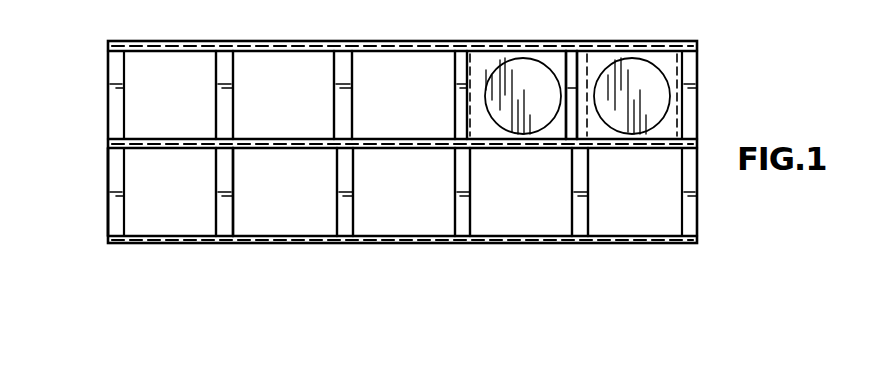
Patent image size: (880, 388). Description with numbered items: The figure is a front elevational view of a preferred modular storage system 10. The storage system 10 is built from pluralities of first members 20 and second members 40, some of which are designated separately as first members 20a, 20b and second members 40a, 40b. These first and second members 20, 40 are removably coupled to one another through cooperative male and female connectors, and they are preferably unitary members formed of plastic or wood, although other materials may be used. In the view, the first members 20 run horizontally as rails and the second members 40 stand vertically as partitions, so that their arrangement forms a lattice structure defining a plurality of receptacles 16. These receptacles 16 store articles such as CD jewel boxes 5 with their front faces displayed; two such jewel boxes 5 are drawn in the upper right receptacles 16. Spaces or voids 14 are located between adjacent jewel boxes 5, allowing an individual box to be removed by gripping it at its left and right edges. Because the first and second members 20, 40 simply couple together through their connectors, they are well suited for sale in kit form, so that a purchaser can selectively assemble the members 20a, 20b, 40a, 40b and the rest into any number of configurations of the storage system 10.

The modular storage system 10 is at (87, 45).
The spaces or voids 14 is at (578, 69).
The receptacles 16 is at (163, 72).
The first members 20 is at (507, 43).
The first member 20a is at (170, 140).
The first member 20b is at (312, 152).
The second members 40 is at (107, 99).
The second member 40a is at (109, 209).
The second member 40b is at (238, 170).
The CD jewel boxes 5 is at (487, 84).